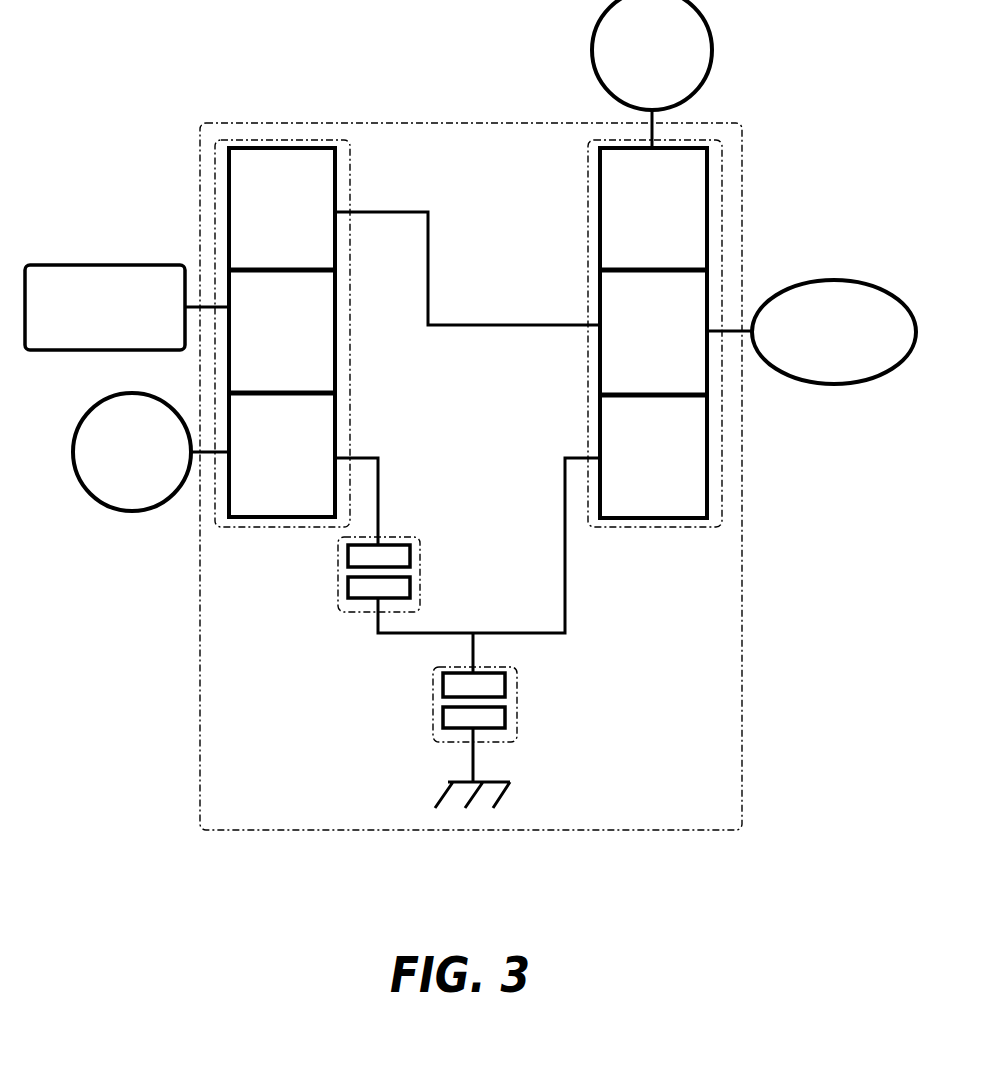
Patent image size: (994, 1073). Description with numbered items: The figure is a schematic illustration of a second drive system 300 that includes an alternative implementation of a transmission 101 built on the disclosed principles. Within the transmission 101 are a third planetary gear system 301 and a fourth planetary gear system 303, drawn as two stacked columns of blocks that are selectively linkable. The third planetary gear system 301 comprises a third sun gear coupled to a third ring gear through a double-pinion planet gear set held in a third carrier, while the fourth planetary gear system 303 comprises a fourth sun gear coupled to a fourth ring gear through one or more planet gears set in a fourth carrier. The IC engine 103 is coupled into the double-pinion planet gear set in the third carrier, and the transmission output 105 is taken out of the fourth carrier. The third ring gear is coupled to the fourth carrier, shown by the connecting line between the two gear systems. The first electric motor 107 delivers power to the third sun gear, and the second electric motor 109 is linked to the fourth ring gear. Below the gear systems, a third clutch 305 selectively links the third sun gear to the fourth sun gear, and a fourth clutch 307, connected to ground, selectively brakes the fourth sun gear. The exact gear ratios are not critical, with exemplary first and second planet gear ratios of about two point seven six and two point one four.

The second drive system 300 is at (172, 64).
The transmission 101 is at (441, 163).
The IC engine 103 is at (81, 340).
The transmission output 105 is at (811, 332).
The first electric motor 107 is at (108, 487).
The second electric motor 109 is at (628, 85).
The third planetary gear system 301 is at (345, 416).
The fourth planetary gear system 303 is at (588, 258).
The third clutch 305 is at (418, 537).
The fourth clutch 307 is at (517, 697).